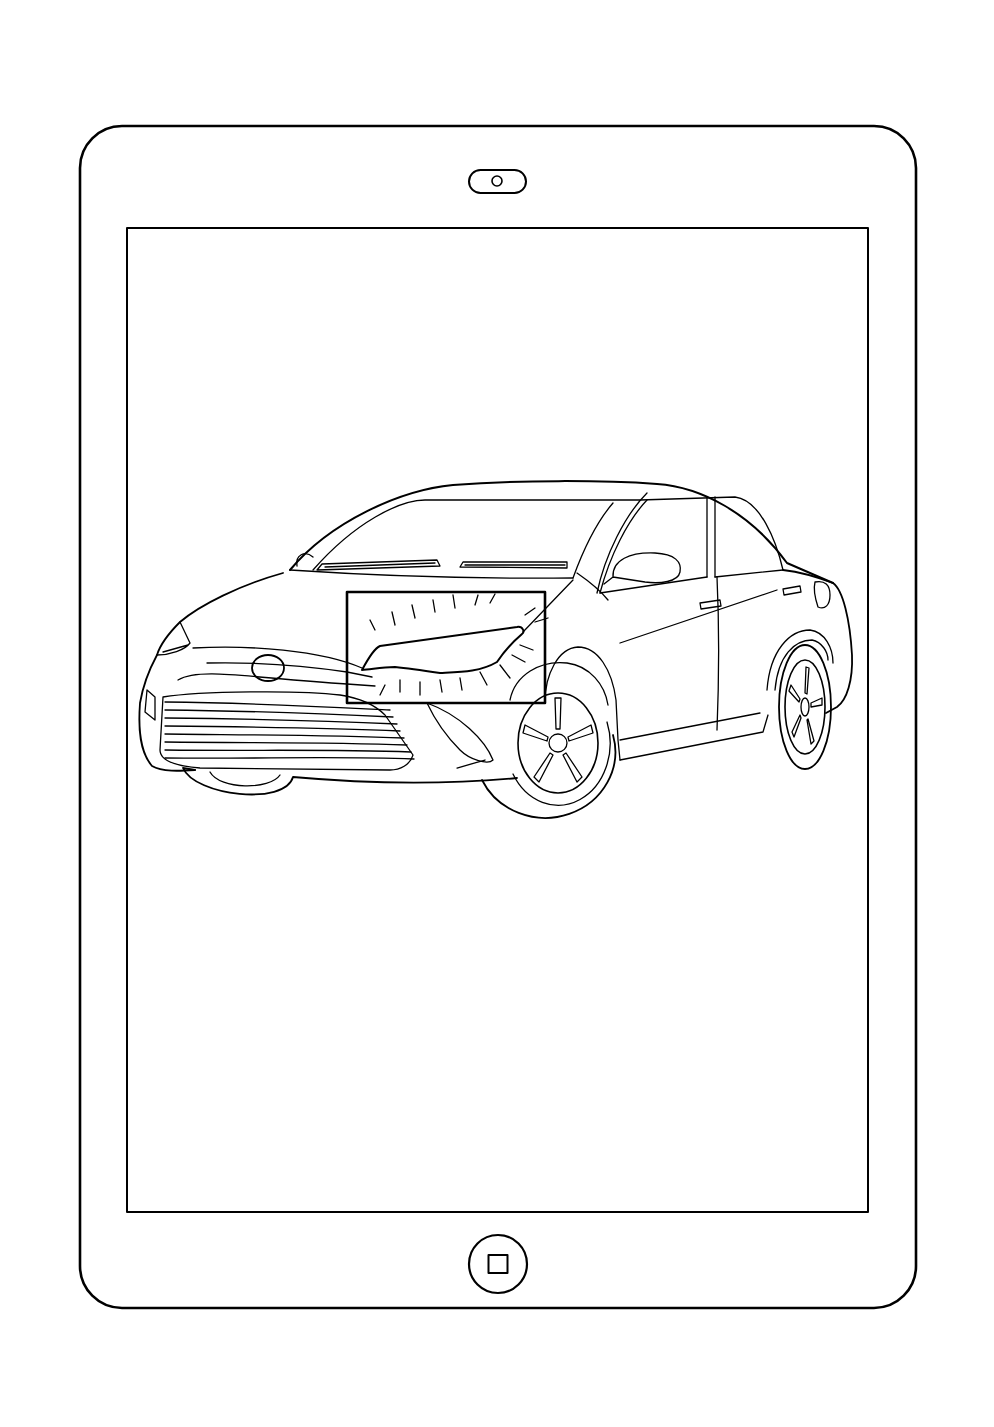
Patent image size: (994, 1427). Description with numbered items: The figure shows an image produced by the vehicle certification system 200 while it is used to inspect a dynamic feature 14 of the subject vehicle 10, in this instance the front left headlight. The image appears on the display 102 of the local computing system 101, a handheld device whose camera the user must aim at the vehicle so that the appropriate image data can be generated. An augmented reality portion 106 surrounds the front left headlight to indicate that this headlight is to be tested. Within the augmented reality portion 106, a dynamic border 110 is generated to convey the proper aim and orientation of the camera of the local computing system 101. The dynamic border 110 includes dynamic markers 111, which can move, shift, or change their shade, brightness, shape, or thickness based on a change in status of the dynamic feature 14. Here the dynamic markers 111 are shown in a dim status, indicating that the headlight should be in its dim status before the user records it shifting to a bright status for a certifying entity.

The vehicle certification system 200 is at (100, 98).
The local computing system 101 is at (160, 98).
The display 102 is at (168, 227).
The subject vehicle 10 is at (538, 482).
The dynamic feature 14 is at (523, 631).
The augmented reality portion 106 is at (347, 627).
The dynamic border 110 is at (392, 650).
The dynamic markers 111 is at (455, 620).